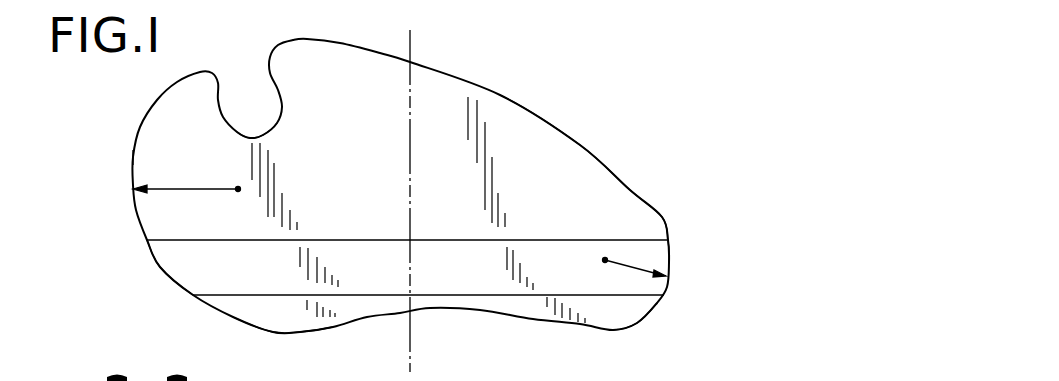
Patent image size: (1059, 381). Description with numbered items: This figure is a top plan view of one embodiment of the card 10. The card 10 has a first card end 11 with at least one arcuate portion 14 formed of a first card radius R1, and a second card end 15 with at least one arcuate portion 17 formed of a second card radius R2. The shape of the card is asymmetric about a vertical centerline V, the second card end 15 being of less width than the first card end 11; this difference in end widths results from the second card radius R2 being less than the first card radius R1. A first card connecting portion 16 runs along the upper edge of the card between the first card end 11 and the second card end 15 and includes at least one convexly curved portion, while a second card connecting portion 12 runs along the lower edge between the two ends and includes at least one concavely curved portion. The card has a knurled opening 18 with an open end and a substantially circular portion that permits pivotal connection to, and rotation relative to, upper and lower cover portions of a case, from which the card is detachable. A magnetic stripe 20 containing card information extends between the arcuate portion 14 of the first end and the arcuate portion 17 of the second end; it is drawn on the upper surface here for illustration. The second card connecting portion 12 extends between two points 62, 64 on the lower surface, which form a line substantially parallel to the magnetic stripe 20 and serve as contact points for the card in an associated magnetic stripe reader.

The card 10 is at (585, 85).
The first card end 11 is at (131, 156).
The second card connecting portion 12 is at (534, 320).
The arcuate portion 14 is at (153, 262).
The second card end 15 is at (665, 214).
The first card connecting portion 16 is at (587, 149).
The arcuate portion 17 is at (669, 248).
The knurled opening 18 is at (277, 127).
The magnetic stripe 20 is at (493, 260).
The point 62 is at (292, 333).
The point 64 is at (620, 335).
The first card radius R1 is at (191, 190).
The second card radius R2 is at (624, 267).
The vertical centerline V is at (412, 42).